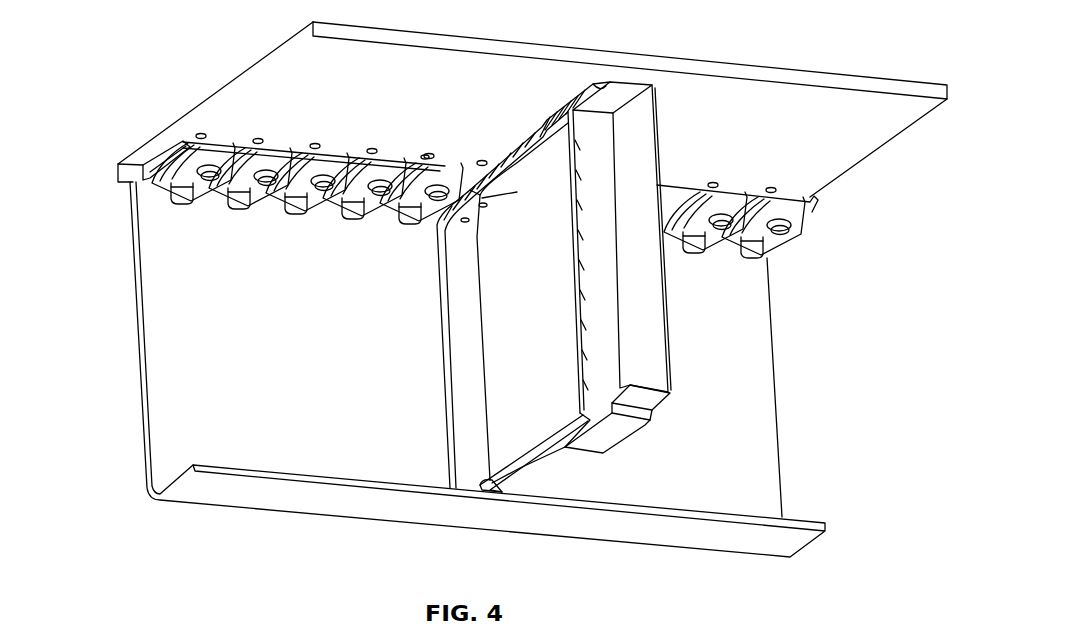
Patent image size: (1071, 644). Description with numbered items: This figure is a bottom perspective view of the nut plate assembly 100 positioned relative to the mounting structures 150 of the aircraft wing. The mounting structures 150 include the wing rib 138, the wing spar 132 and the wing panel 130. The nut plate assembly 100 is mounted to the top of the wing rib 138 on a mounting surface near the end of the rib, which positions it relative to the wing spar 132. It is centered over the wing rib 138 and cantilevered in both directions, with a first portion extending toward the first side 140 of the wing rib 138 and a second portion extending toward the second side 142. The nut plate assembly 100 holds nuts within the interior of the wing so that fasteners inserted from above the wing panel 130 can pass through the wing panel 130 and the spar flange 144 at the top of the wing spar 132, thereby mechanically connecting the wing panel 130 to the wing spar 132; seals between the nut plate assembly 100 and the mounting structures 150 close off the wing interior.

The nut plate assembly 100 is at (190, 213).
The wing panel 130 is at (243, 82).
The wing spar 132 is at (167, 402).
The wing rib 138 is at (498, 377).
The first side 140 is at (597, 423).
The second side 142 is at (640, 427).
The spar flange 144 is at (147, 160).
The mounting structures 150 is at (852, 83).